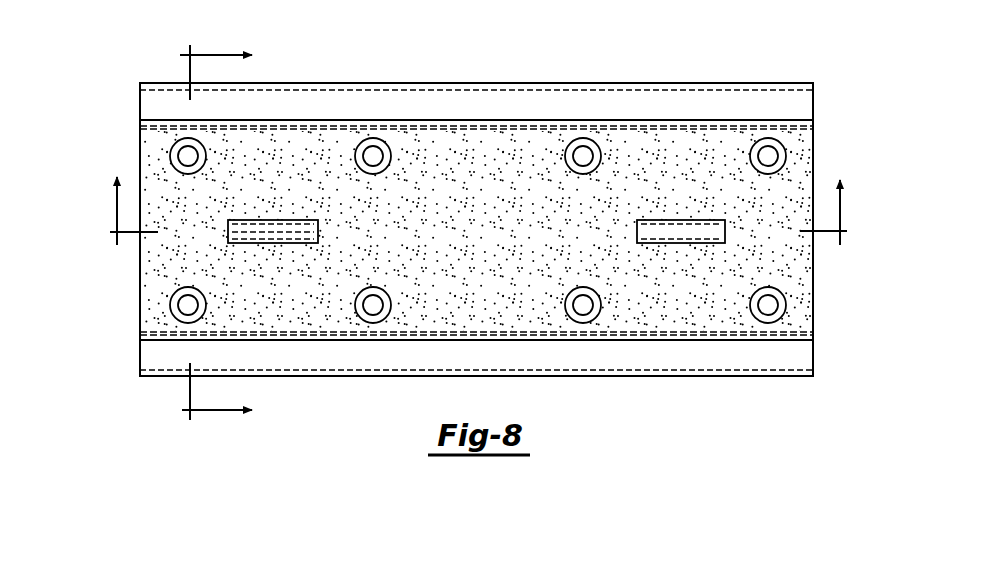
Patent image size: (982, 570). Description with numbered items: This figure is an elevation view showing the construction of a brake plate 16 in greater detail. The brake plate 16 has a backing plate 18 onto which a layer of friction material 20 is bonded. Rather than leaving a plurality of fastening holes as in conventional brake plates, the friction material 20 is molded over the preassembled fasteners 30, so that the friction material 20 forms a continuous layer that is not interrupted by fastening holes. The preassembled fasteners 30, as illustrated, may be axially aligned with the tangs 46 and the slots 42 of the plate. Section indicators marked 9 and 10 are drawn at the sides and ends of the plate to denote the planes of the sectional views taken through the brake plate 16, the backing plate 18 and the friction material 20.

The brake plate 16 is at (637, 70).
The backing plate 18 is at (828, 352).
The friction material 20 is at (541, 153).
The preassembled fasteners 30 is at (184, 157).
The slots 42 is at (288, 220).
The tangs 46 is at (277, 236).
The section line 10- 10 is at (225, 235).
The section line 9- 9 is at (476, 201).